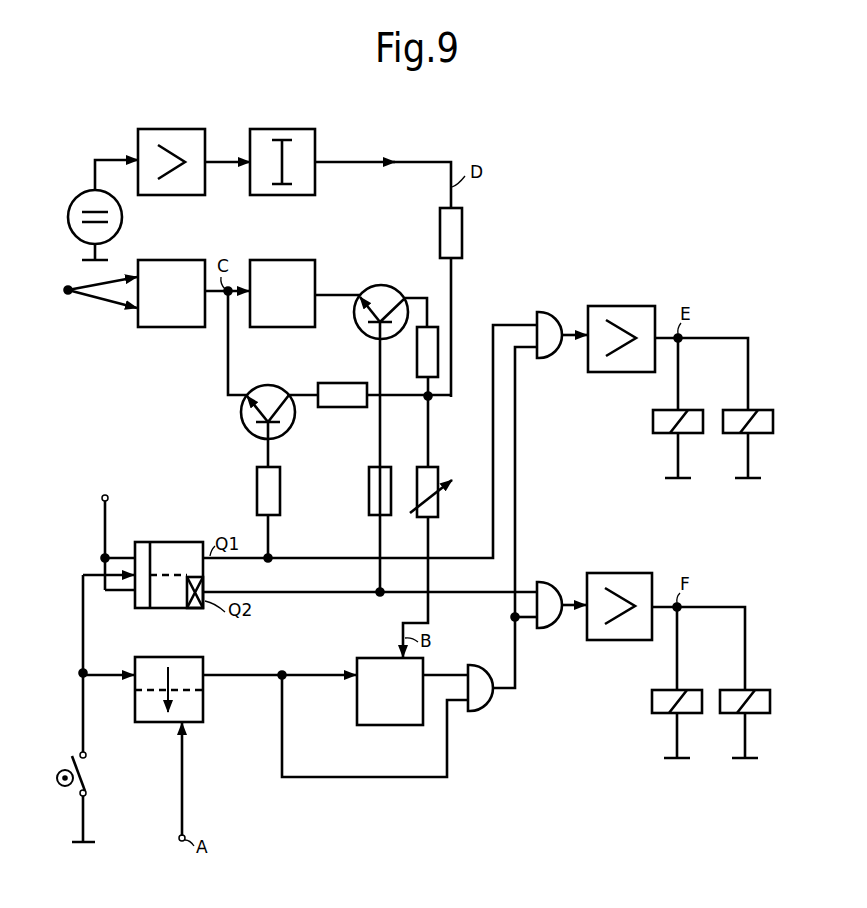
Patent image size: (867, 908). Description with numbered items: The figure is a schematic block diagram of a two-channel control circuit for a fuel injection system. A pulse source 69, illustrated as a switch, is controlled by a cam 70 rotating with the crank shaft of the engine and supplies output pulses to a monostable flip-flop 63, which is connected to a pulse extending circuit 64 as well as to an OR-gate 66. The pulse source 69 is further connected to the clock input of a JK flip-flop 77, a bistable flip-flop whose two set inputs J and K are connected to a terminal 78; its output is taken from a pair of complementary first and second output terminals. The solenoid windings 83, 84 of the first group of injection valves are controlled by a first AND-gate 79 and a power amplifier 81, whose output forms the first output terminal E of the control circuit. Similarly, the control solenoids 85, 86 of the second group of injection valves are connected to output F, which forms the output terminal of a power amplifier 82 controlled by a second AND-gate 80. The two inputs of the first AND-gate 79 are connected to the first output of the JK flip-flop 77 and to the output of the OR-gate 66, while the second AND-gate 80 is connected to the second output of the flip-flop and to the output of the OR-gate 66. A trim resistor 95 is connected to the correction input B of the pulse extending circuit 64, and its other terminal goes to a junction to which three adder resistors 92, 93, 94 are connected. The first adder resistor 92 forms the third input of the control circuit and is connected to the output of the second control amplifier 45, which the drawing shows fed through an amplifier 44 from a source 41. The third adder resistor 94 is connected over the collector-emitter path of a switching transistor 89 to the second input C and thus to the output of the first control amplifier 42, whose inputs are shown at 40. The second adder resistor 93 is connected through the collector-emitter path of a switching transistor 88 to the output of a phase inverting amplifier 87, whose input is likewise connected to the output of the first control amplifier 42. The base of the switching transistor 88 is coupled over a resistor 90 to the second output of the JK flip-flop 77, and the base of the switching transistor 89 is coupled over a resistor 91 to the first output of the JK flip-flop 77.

The input terminals 40 is at (68, 294).
The DC voltage source 41 is at (122, 217).
The first control amplifier 42 is at (163, 258).
The amplifier 44 is at (170, 129).
The second control amplifier 45 is at (268, 129).
The monostable flip-flop 63 is at (192, 661).
The pulse extending circuit 64 is at (377, 663).
The OR-gate 66 is at (479, 665).
The pulse source 69 is at (86, 776).
The cam 70 is at (65, 786).
The JK flip-flop 77 is at (168, 542).
The terminal 78 is at (108, 495).
The first AND-gate 79 is at (548, 312).
The second AND-gate 80 is at (548, 582).
The power amplifier 81 is at (620, 306).
The power amplifier 82 is at (620, 573).
The solenoid winding 83 is at (655, 417).
The solenoid winding 84 is at (735, 410).
The control solenoid 85 is at (654, 697).
The control solenoid 86 is at (733, 690).
The phase inverting amplifier 87 is at (270, 260).
The switching transistor 88 is at (381, 286).
The switching transistor 89 is at (241, 418).
The resistor 90 is at (368, 482).
The resistor 91 is at (256, 482).
The first adder resistor 92 is at (462, 244).
The second adder resistor 93 is at (416, 354).
The third adder resistor 94 is at (340, 383).
The trim resistor 95 is at (440, 505).